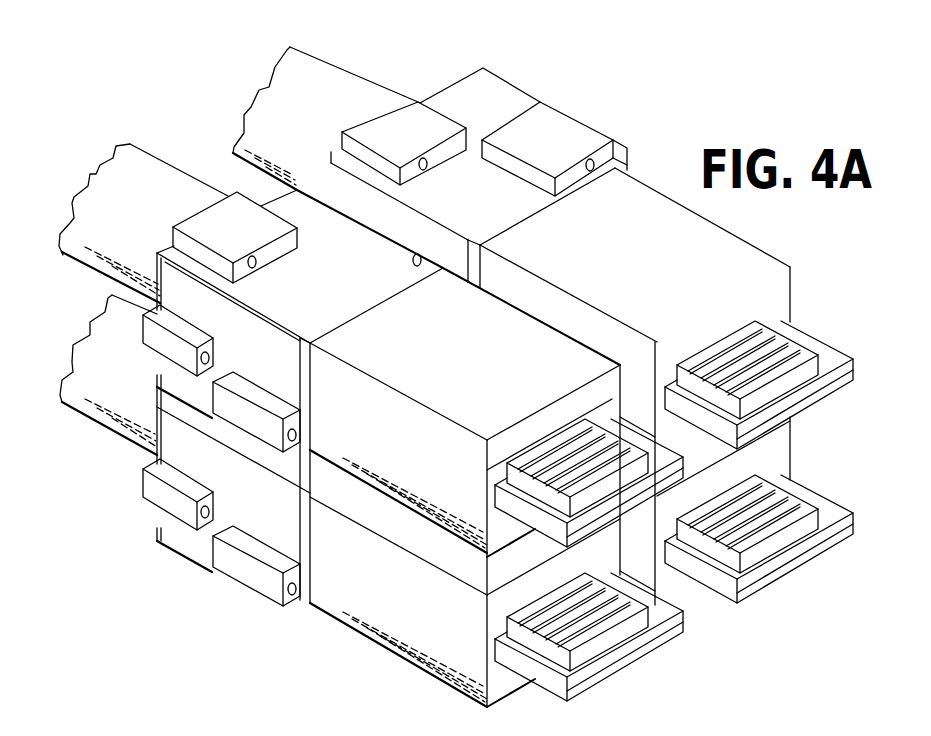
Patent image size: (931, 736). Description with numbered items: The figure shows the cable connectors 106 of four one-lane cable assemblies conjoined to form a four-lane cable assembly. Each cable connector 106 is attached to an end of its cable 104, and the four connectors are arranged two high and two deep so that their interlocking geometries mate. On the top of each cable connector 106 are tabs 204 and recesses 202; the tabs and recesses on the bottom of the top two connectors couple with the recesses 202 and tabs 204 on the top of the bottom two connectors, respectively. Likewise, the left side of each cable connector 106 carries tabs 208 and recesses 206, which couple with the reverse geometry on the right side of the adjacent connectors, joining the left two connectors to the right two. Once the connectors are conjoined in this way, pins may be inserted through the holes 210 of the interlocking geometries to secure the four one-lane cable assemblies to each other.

The cable 104 is at (222, 233).
The cable connector 106 is at (593, 423).
The recesses 202 is at (326, 303).
The tabs 204 is at (567, 150).
The recesses 206 is at (239, 521).
The tabs 208 is at (239, 578).
The holes 210 is at (304, 316).